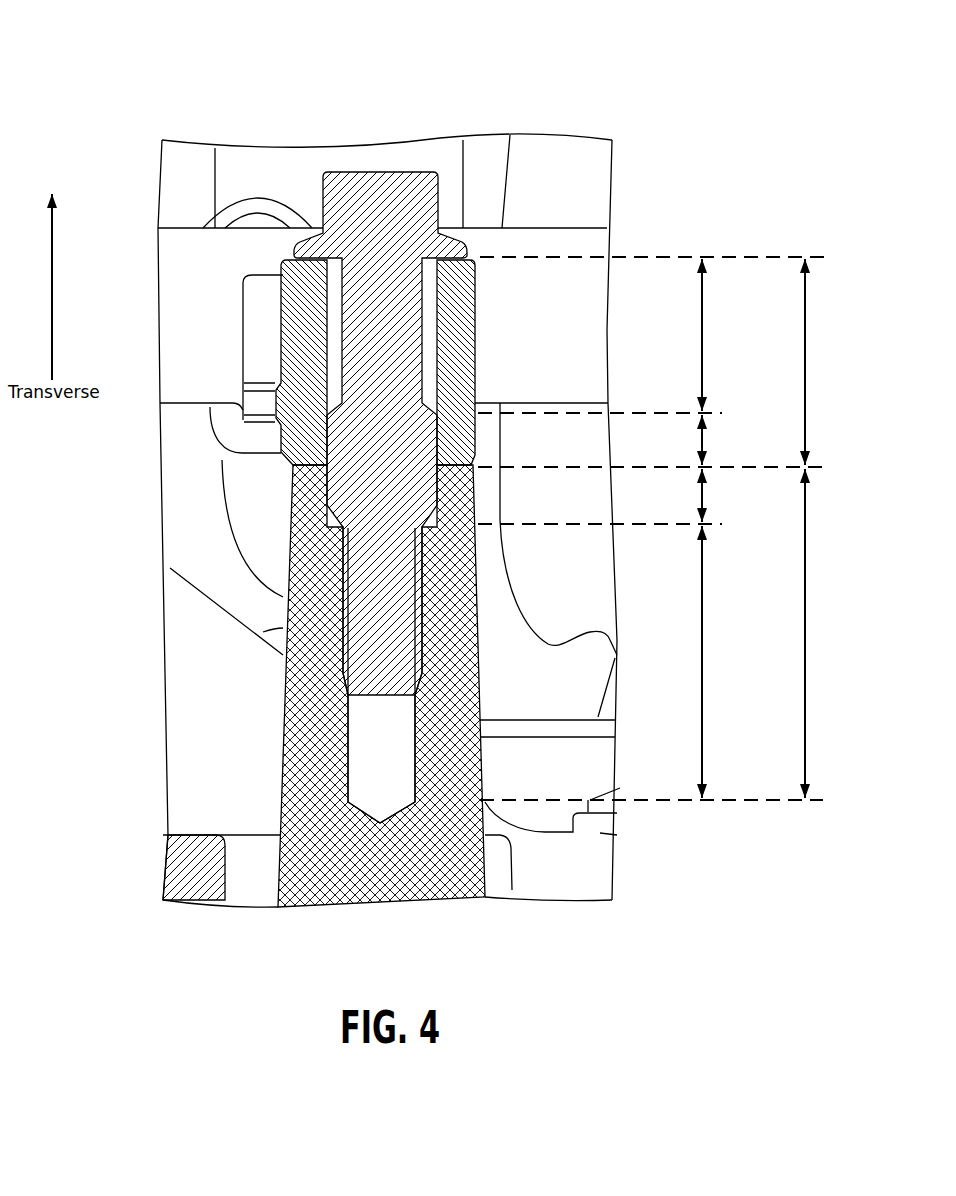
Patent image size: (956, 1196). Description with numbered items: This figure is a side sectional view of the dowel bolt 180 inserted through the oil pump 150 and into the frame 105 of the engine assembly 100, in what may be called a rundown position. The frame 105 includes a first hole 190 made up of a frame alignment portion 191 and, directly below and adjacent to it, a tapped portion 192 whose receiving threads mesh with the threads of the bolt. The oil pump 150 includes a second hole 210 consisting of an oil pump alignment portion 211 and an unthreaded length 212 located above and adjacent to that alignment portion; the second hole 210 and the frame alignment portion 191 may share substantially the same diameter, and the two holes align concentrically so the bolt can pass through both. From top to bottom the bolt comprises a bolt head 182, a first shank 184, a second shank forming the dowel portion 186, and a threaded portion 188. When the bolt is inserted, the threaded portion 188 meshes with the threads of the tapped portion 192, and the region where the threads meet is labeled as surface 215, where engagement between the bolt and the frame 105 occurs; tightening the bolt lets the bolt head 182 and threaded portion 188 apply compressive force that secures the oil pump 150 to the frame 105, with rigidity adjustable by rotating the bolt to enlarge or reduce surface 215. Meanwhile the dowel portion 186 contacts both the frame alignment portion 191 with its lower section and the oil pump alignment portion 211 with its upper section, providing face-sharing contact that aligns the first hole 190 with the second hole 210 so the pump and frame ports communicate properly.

The engine assembly 100 is at (205, 38).
The frame 105 is at (233, 875).
The oil pump 150 is at (284, 411).
The dowel bolt 180 is at (391, 167).
The bolt head 182 is at (364, 229).
The first shank 184 is at (364, 341).
The dowel portion 186 is at (364, 475).
The threaded portion 188 is at (364, 628).
The first hole 190 is at (364, 748).
The frame alignment portion 191 is at (724, 495).
The tapped portion 192 is at (724, 662).
The second hole 210 is at (826, 362).
The oil pump alignment portion 211 is at (724, 440).
The length 212 is at (724, 335).
The surface 215 is at (342, 597).